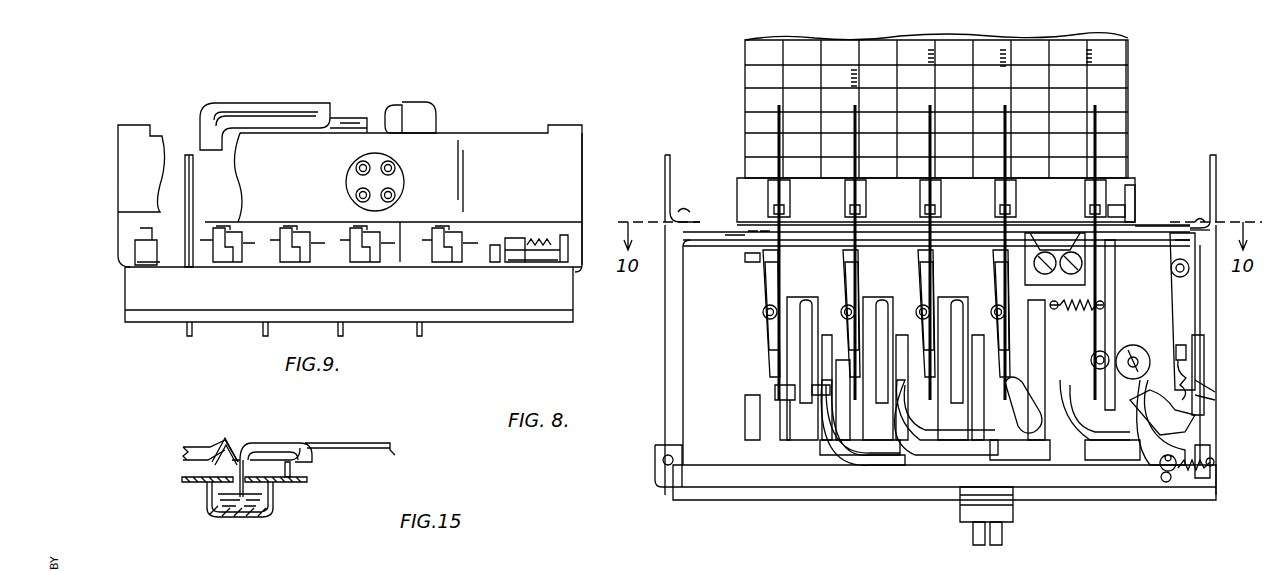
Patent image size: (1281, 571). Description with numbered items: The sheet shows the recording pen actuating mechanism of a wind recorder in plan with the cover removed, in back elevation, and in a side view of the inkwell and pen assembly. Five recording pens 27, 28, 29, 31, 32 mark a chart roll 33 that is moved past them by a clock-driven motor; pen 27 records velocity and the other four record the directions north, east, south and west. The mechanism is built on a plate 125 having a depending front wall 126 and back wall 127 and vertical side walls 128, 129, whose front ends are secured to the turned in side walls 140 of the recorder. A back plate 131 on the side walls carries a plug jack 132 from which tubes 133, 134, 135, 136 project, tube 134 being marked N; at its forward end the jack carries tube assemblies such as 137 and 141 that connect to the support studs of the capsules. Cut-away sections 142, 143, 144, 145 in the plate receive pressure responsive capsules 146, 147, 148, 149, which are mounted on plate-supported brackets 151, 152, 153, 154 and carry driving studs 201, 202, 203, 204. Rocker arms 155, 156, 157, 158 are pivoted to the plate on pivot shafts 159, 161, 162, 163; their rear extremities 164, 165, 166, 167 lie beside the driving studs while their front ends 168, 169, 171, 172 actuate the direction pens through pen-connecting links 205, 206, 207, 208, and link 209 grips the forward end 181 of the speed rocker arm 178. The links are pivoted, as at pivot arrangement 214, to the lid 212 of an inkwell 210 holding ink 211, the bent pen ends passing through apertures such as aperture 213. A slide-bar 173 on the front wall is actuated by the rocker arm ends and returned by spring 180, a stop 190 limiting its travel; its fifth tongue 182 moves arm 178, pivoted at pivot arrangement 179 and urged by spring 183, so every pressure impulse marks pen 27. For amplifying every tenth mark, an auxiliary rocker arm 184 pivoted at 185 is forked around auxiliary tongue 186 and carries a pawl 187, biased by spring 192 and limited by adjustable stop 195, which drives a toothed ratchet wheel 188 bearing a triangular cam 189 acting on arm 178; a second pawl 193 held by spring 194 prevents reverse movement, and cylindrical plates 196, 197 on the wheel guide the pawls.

In FIG. 8, the recording pen 27 is at (1095, 130).
In FIG. 8, the recording pen 28 is at (1005, 130).
In FIG. 8, the recording pen 29 is at (930, 130).
In FIG. 8, the recording pen 31 is at (855, 130).
In FIG. 15, the recording pen 32 is at (330, 444).
In FIG. 8, the recording pen 32 is at (779, 130).
In FIG. 8, the chart roll 33 is at (1126, 108).
In FIG. 8, the plate 125 is at (690, 398).
In FIG. 8, the front wall 126 is at (686, 255).
In FIG. 9, the back wall 127 is at (125, 297).
In FIG. 9, the side wall 128 is at (118, 200).
In FIG. 8, the side wall 128 is at (665, 340).
In FIG. 9, the side wall 129 is at (582, 200).
In FIG. 8, the side wall 129 is at (1216, 375).
In FIG. 9, the back plate 131 is at (482, 145).
In FIG. 8, the back plate 131 is at (1115, 500).
In FIG. 9, the plug jack 132 is at (373, 165).
In FIG. 8, the plug jack 132 is at (1013, 522).
In FIG. 9, the tube 133 is at (356, 162).
In FIG. 8, the tube 133 is at (975, 545).
In FIG. 9, the tube 134 is at (395, 162).
In FIG. 8, the tube 134 is at (998, 545).
In FIG. 9, the tube 135 is at (356, 196).
In FIG. 9, the tube 136 is at (396, 196).
In FIG. 9, the tube assembly 137 is at (435, 105).
In FIG. 8, the turned in side wall 140 is at (665, 200).
In FIG. 9, the tube assembly 141 is at (222, 115).
In FIG. 8, the cut-away section 142 is at (1000, 272).
In FIG. 8, the cut-away section 143 is at (1000, 312).
In FIG. 8, the cut-away section 144 is at (780, 393).
In FIG. 8, the cut-away section 145 is at (1047, 352).
In FIG. 8, the pressure responsive capsule 146 is at (1000, 292).
In FIG. 8, the pressure responsive capsule 147 is at (1000, 330).
In FIG. 8, the pressure responsive capsule 148 is at (1005, 372).
In FIG. 8, the pressure responsive capsule 149 is at (1030, 402).
In FIG. 9, the bracket 151 is at (215, 268).
In FIG. 9, the bracket 152 is at (288, 268).
In FIG. 9, the bracket 153 is at (368, 268).
In FIG. 9, the bracket 154 is at (448, 268).
In FIG. 8, the rocker arm 155 is at (768, 289).
In FIG. 8, the rocker arm 156 is at (848, 285).
In FIG. 8, the rocker arm 157 is at (928, 287).
In FIG. 8, the rocker arm 158 is at (998, 282).
In FIG. 8, the pivot shaft 159 is at (763, 311).
In FIG. 8, the pivot shaft 161 is at (872, 300).
In FIG. 8, the pivot shaft 162 is at (985, 302).
In FIG. 8, the pivot shaft 163 is at (1000, 322).
In FIG. 8, the rear extremity 164 is at (745, 392).
In FIG. 8, the rear extremity 165 is at (855, 420).
In FIG. 8, the rear extremity 166 is at (925, 410).
In FIG. 8, the rear extremity 167 is at (1005, 400).
In FIG. 15, the front end 168 is at (193, 447).
In FIG. 8, the front end 168 is at (775, 254).
In FIG. 8, the front end 169 is at (855, 254).
In FIG. 8, the front end 171 is at (928, 254).
In FIG. 8, the front end 172 is at (1002, 254).
In FIG. 8, the slide-bar 173 is at (1140, 227).
In FIG. 8, the rocker arm 178 is at (1100, 270).
In FIG. 8, the pivot arrangement 179 is at (1204, 330).
In FIG. 8, the spring 180 is at (724, 230).
In FIG. 8, the forward end 181 is at (1098, 240).
In FIG. 8, the fifth tongue 182 is at (1210, 185).
In FIG. 8, the spring 183 is at (1085, 302).
In FIG. 8, the auxiliary rocker arm 184 is at (1183, 298).
In FIG. 8, the pivot 185 is at (1190, 282).
In FIG. 8, the auxiliary tongue 186 is at (1228, 228).
In FIG. 8, the pawl 187 is at (1208, 394).
In FIG. 8, the toothed ratchet wheel 188 is at (1180, 412).
In FIG. 8, the triangular cam 189 is at (1180, 440).
In FIG. 8, the stop 190 is at (1105, 218).
In FIG. 8, the spring 192 is at (1195, 362).
In FIG. 8, the second pawl 193 is at (1228, 445).
In FIG. 8, the spring 194 is at (1185, 475).
In FIG. 8, the adjustable stop 195 is at (1185, 350).
In FIG. 8, the cylindrical plate 196 is at (1120, 425).
In FIG. 8, the cylindrical plate 197 is at (1135, 458).
In FIG. 8, the driving stud 201 is at (728, 398).
In FIG. 8, the driving stud 202 is at (875, 440).
In FIG. 8, the driving stud 203 is at (955, 430).
In FIG. 8, the driving stud 204 is at (1040, 400).
In FIG. 15, the pen-connecting link 205 is at (230, 456).
In FIG. 8, the pen-connecting link 205 is at (786, 210).
In FIG. 8, the pen-connecting link 206 is at (862, 210).
In FIG. 8, the pen-connecting link 207 is at (937, 210).
In FIG. 8, the pen-connecting link 208 is at (1010, 210).
In FIG. 8, the pen-connecting link 209 is at (1090, 215).
In FIG. 15, the inkwell 210 is at (273, 505).
In FIG. 8, the inkwell 210 is at (1104, 217).
In FIG. 15, the ink 211 is at (230, 505).
In FIG. 15, the lid 212 is at (305, 482).
In FIG. 15, the aperture 213 is at (220, 473).
In FIG. 15, the pivot arrangement 214 is at (292, 468).